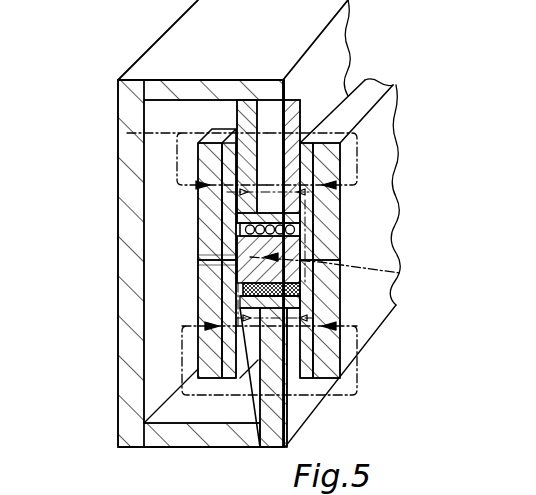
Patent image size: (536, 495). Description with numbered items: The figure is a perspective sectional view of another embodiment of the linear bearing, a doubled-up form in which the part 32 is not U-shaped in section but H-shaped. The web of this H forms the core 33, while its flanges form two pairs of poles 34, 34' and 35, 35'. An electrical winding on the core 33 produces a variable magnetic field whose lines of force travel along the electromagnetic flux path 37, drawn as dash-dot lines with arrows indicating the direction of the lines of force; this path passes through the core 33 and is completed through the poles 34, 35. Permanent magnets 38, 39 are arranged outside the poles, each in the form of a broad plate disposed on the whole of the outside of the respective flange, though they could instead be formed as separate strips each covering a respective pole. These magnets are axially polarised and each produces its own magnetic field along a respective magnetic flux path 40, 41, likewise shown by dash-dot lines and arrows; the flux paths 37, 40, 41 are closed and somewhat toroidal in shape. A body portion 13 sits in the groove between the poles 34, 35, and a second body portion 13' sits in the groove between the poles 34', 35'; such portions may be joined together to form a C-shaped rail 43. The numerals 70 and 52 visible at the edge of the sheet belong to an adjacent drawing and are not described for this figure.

The body portion 13 is at (324, 134).
The body portion 13' is at (303, 361).
The part 32 is at (305, 243).
The core 33 is at (236, 238).
The pole 34 is at (158, 194).
The pole 34' is at (160, 327).
The pole 35 is at (371, 201).
The pole 35' is at (358, 319).
The electromagnetic flux path 37 is at (400, 273).
The permanent magnet 38 is at (213, 273).
The permanent magnet 39 is at (376, 299).
The magnetic flux path 40 is at (127, 137).
The magnetic flux path 41 is at (365, 156).
The C-shaped rail 43 is at (138, 322).
The numeral of adjacent figure 70 is at (242, 488).
The numeral of adjacent figure 52 is at (425, 488).